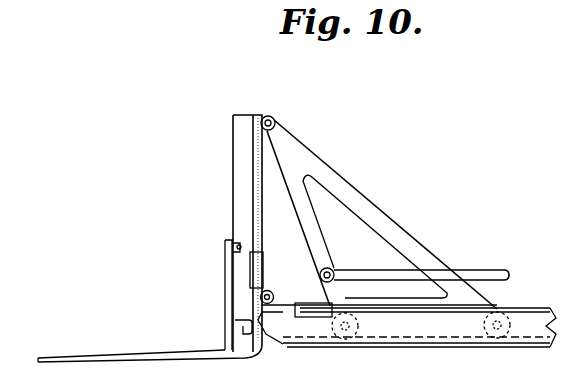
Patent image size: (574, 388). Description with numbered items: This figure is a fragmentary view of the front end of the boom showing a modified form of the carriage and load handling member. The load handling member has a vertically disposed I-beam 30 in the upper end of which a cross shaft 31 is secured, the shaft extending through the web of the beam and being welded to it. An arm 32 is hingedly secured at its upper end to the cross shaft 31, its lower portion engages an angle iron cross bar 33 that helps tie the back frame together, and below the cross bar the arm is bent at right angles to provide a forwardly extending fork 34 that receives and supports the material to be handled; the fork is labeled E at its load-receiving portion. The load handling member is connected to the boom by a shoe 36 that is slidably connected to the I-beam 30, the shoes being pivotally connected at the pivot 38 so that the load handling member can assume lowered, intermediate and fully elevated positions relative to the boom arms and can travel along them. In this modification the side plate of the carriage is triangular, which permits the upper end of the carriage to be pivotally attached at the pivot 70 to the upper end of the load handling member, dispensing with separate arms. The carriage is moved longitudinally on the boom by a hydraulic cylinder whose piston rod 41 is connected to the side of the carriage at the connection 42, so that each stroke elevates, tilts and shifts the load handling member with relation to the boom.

The I-beam 30 is at (233, 188).
The cross shaft 31 is at (232, 246).
The arm 32 is at (228, 268).
The angle iron cross bar 33 is at (234, 320).
The fork 34 is at (100, 356).
The shoe 36 is at (265, 260).
The pivotal connection 38 is at (273, 292).
The piston rod 41 is at (481, 270).
The piston rod connection 42 is at (336, 270).
The pivotal attachment 70 is at (276, 121).
The load engaging edge E is at (176, 342).